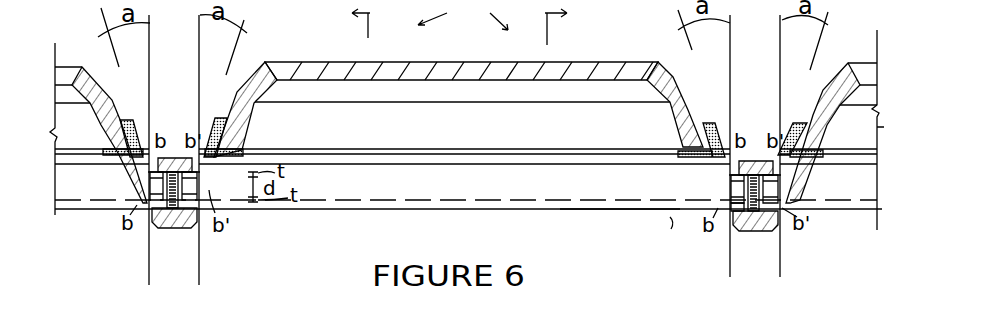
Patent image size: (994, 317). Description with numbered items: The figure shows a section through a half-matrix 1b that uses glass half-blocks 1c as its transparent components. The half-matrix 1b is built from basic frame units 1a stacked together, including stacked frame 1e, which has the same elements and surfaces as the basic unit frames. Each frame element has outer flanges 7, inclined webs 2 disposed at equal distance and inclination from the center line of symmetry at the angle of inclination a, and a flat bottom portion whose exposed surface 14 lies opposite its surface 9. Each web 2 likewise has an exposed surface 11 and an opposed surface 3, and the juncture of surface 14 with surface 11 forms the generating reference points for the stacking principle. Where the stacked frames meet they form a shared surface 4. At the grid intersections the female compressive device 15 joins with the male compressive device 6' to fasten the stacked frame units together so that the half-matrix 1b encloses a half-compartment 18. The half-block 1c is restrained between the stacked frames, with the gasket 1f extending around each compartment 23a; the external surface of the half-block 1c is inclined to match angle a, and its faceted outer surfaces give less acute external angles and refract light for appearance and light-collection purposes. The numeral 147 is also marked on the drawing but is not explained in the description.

The basic frame unit 1a is at (649, 243).
The half-matrix 1b is at (458, 22).
The half-block 1c is at (592, 73).
The stacked frame 1e is at (778, 68).
The gasket 1f is at (803, 110).
The web 2 is at (787, 190).
The opposed surface of web 3 is at (787, 197).
The shared surface 4 is at (787, 177).
The male compressive device 6' is at (465, 237).
The outer flange 7 is at (820, 160).
The opposed surface of flat portion 9 is at (664, 221).
The exposed surface of web 11 is at (783, 212).
The exposed surface of flat portion 14 is at (737, 226).
The female compressive device 15 is at (760, 147).
The half-compartment 18 is at (516, 187).
The compartment 23a is at (516, 130).
The intermediate layer 147 is at (620, 192).